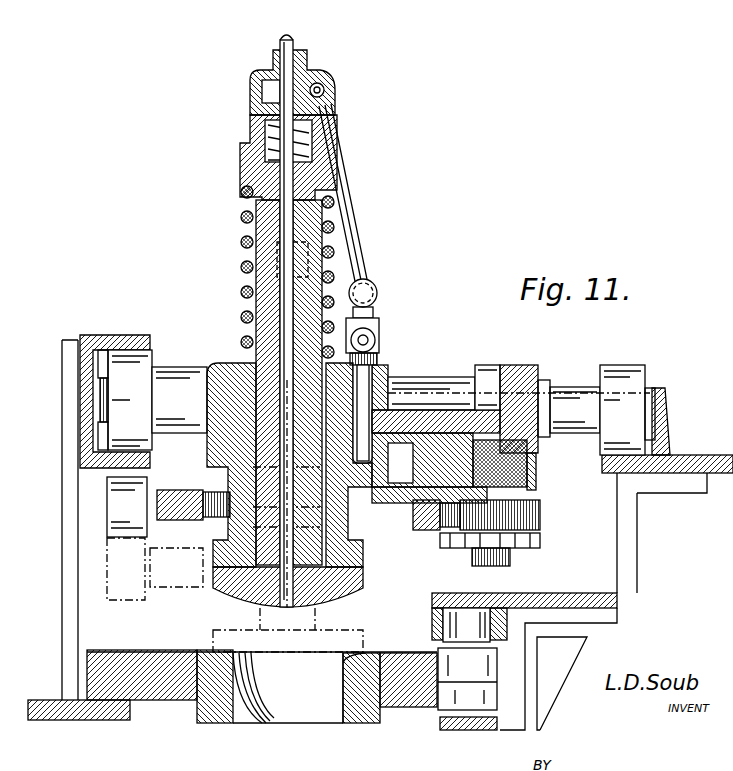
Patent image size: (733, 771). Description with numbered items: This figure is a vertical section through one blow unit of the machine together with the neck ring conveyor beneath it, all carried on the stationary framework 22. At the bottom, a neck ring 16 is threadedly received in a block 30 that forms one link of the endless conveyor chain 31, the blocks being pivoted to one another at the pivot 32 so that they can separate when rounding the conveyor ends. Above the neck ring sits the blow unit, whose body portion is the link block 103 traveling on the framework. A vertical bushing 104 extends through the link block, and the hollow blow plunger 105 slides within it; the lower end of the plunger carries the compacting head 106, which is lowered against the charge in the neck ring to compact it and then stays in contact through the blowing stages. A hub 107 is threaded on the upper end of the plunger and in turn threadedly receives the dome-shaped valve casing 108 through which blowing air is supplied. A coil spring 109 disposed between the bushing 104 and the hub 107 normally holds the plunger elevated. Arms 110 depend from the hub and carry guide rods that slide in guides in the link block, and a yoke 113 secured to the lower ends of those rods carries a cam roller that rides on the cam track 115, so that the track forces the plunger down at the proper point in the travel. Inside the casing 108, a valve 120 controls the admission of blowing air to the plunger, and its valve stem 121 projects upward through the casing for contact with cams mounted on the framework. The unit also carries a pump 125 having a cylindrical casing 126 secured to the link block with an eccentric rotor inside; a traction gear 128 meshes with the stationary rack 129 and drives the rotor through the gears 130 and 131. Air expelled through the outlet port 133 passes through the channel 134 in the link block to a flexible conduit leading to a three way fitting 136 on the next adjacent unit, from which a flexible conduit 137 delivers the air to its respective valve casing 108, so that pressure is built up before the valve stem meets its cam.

The stationary framework 22 is at (67, 616).
The block 30 is at (142, 660).
The neck ring 16 is at (373, 657).
The endless conveyor chain 31 is at (427, 710).
The pivot 32 is at (436, 641).
The link block 103 is at (433, 410).
The vertical bushing 104 is at (430, 500).
The hollow blow plunger 105 is at (277, 275).
The compacting head 106 is at (363, 591).
The hub 107 is at (243, 170).
The dome-shaped valve casing 108 is at (308, 62).
The coil spring 109 is at (246, 318).
The arms 110 is at (118, 512).
The yoke 113 is at (163, 520).
The cam track 115 is at (100, 537).
The valve 120 is at (304, 117).
The valve stem 121 is at (297, 40).
The pump 125 is at (540, 497).
The cylindrical casing 126 is at (527, 468).
The traction gear 128 is at (456, 549).
The rack 129 is at (527, 555).
The gear 130 is at (537, 520).
The gear 131 is at (440, 527).
The outlet port 133 is at (370, 466).
The channel 134 is at (363, 397).
The three way fitting 136 is at (377, 321).
The flexible conduit 137 is at (354, 238).